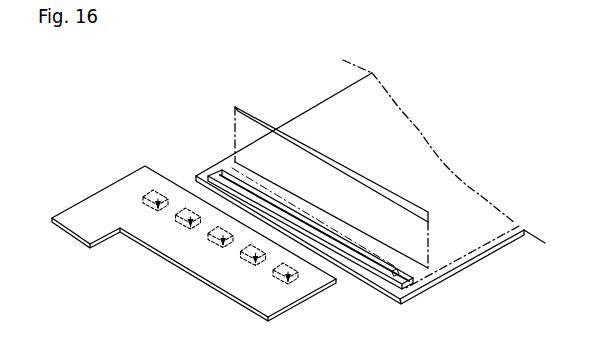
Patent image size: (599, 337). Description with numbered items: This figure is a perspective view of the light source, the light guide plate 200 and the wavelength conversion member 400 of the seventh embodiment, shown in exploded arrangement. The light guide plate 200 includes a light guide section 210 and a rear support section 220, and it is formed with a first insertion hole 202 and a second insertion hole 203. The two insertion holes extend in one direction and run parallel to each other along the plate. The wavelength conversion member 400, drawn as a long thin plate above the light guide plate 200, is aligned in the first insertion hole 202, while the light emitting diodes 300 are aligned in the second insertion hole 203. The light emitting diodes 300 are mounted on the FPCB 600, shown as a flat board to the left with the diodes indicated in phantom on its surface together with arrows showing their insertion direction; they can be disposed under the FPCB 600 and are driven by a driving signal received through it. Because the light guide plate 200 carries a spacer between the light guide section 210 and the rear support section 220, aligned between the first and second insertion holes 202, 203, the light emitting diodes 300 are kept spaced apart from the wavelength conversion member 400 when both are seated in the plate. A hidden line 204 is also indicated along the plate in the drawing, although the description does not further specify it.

The light guide plate 200 is at (300, 87).
The first insertion hole 202 is at (400, 252).
The second insertion hole 203 is at (329, 236).
The hidden guide line 204 is at (287, 197).
The light guide section 210 is at (463, 251).
The rear support section 220 is at (368, 276).
The light emitting diodes 300 is at (147, 189).
The wavelength conversion member 400 is at (238, 105).
The FPCB 600 is at (73, 212).